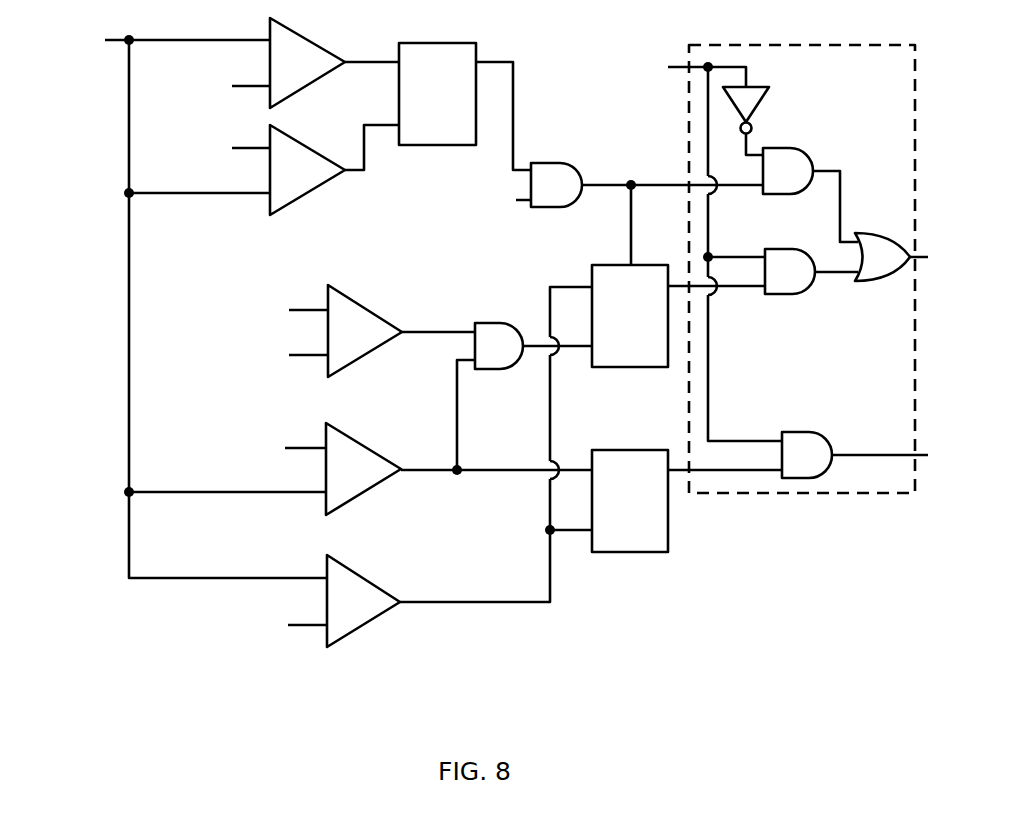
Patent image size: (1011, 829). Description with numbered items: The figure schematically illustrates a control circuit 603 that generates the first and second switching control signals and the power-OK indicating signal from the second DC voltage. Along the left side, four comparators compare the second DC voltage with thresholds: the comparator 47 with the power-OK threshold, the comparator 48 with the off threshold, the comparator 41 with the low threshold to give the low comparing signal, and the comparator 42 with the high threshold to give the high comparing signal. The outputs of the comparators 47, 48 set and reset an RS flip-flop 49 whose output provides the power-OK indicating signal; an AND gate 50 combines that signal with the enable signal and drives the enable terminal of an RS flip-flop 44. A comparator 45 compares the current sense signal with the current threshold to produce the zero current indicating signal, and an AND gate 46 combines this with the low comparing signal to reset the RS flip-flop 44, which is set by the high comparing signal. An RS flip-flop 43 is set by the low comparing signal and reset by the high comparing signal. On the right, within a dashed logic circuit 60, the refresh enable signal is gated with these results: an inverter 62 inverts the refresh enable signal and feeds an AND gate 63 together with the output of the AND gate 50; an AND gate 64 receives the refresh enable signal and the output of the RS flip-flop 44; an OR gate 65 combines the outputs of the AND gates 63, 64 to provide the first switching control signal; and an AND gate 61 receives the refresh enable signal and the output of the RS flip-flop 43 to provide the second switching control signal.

The control circuit 603 is at (946, 62).
The comparator 47 is at (311, 75).
The comparator 48 is at (311, 184).
The RS flip-flop 49 is at (451, 104).
The AND gate 50 is at (567, 197).
The comparator 45 is at (369, 346).
The AND gate 46 is at (511, 359).
The comparator 41 is at (367, 480).
The comparator 42 is at (369, 613).
The RS flip-flop 44 is at (644, 331).
The RS flip-flop 43 is at (644, 511).
The logic circuit 60 is at (716, 46).
The inverter 62 is at (755, 115).
The AND gate 63 is at (801, 184).
The AND gate 64 is at (801, 282).
The OR gate 65 is at (895, 266).
The AND gate 61 is at (819, 469).